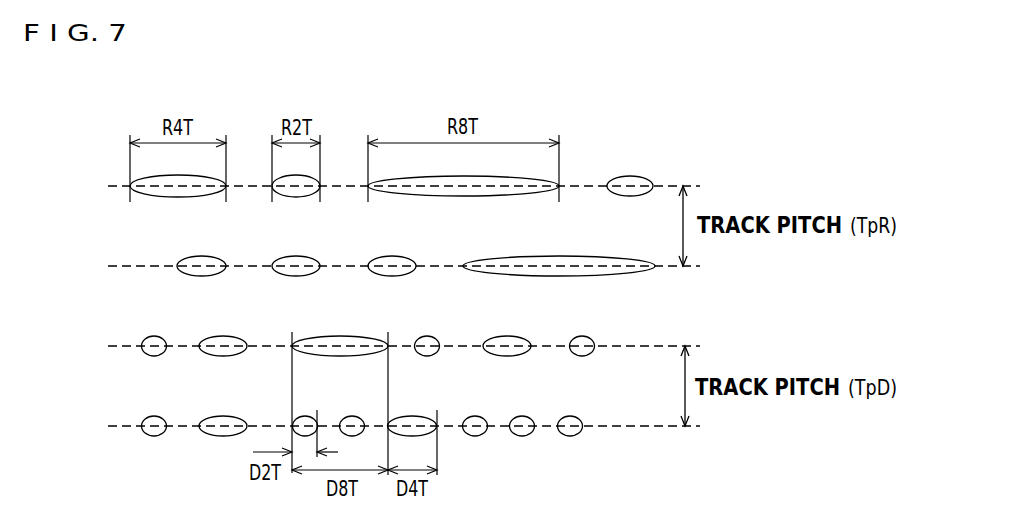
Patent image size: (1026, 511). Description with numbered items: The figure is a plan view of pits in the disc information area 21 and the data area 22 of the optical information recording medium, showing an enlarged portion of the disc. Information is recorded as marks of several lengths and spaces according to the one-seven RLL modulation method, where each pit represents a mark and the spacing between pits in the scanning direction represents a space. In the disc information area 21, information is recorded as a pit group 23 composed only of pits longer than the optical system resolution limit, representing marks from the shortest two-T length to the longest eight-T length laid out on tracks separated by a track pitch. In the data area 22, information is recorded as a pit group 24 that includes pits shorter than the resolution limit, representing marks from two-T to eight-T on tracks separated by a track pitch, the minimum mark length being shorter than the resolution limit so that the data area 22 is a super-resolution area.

The disc information area 21 is at (102, 167).
The data area 22 is at (102, 327).
The pit group 23 is at (630, 176).
The pit group 24 is at (570, 437).